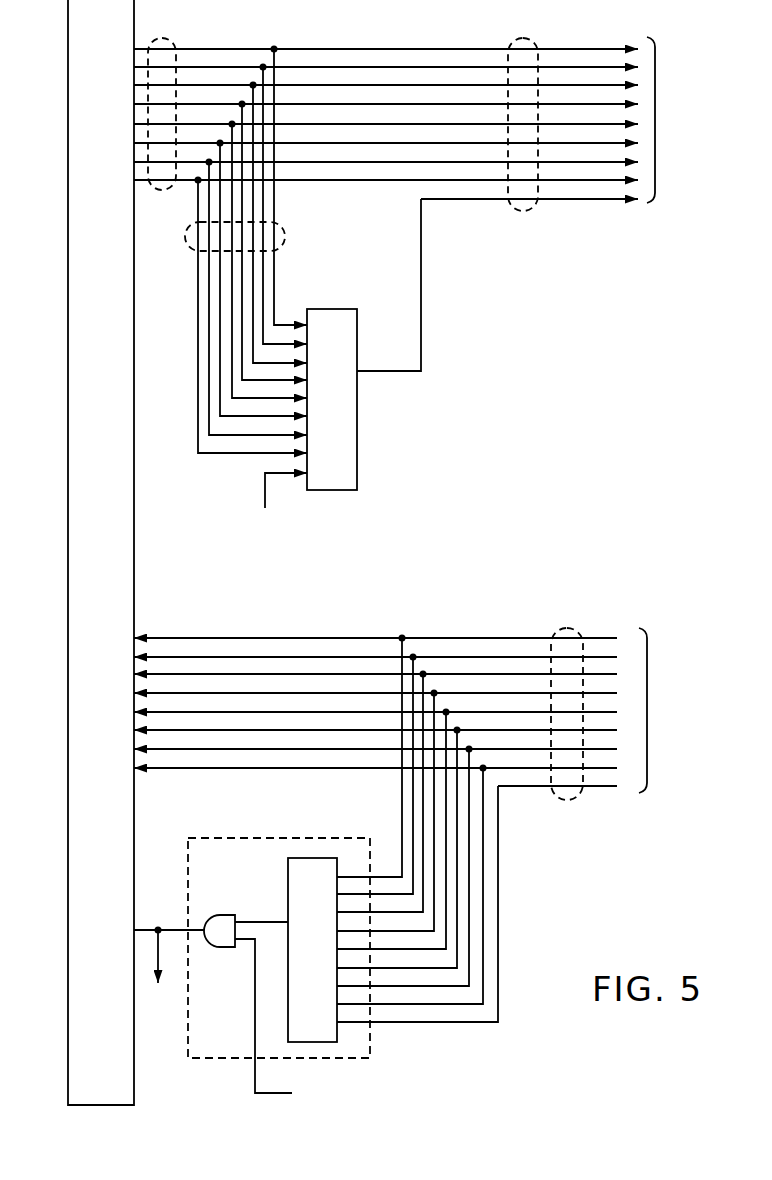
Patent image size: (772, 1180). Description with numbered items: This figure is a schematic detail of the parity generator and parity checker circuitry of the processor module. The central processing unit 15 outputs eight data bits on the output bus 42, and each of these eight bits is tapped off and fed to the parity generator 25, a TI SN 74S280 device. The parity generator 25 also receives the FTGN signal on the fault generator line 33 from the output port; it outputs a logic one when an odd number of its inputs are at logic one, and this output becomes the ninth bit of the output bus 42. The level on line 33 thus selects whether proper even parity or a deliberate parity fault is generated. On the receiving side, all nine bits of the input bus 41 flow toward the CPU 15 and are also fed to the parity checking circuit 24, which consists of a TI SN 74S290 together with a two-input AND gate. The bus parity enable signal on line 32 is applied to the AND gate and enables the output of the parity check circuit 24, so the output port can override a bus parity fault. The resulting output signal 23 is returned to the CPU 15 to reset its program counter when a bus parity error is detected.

The central processing unit 15 is at (68, 56).
The output bus 42 is at (537, 43).
The input bus 41 is at (570, 624).
The parity generator 25 is at (340, 311).
The parity checking circuit 24 is at (327, 838).
The output signal 23 is at (142, 928).
The fault generator line 33 is at (265, 492).
The BPE line 32 is at (265, 1097).